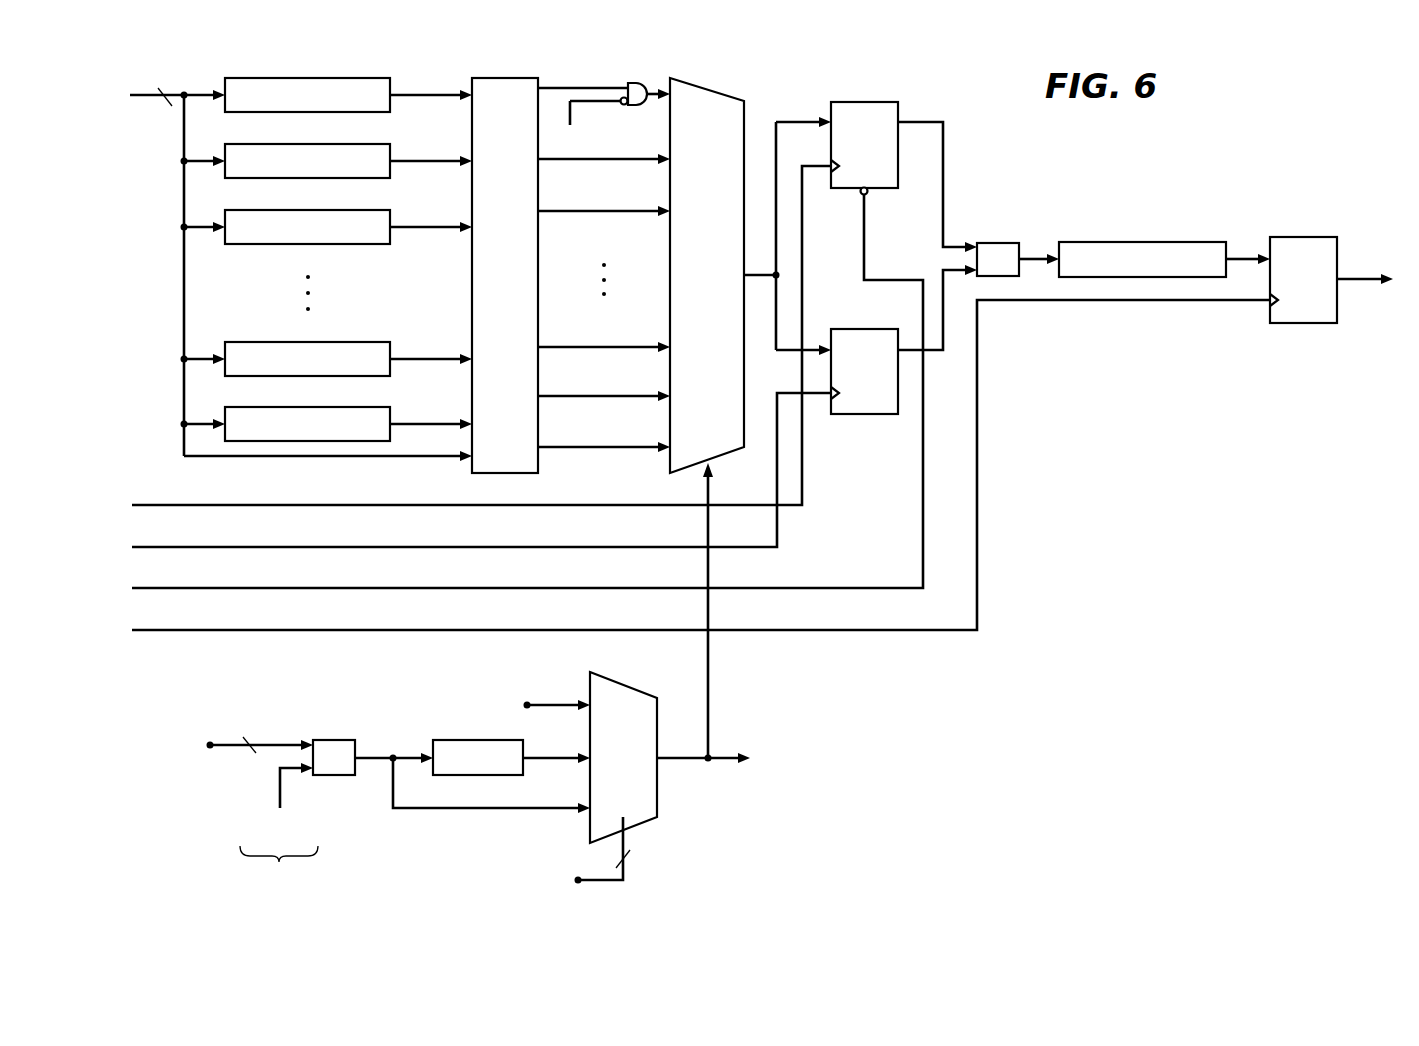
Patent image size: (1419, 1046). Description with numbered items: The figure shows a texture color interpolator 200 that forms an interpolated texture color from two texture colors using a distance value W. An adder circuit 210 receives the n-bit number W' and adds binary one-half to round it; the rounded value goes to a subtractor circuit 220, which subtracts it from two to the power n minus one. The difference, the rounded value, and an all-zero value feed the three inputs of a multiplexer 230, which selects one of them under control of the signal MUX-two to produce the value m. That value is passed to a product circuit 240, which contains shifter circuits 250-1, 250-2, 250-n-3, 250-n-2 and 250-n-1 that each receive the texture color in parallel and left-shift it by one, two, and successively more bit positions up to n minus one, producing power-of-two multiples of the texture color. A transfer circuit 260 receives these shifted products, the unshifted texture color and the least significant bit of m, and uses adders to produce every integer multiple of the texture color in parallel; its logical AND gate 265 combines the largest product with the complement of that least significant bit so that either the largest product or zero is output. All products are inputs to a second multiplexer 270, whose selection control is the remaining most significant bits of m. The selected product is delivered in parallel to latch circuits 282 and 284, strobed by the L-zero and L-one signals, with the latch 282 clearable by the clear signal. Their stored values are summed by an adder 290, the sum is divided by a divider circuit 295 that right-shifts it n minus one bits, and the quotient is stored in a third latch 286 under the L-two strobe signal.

The texture color interpolator 200 is at (1016, 180).
The adder circuit 210 is at (334, 740).
The subtractor circuit 220 is at (442, 740).
The multiplexer 230 is at (624, 685).
The product circuit 240 is at (203, 66).
The shifter circuit 250-n-1 is at (428, 76).
The shifter circuit 250-n-2 is at (428, 142).
The shifter circuit 250-n-3 is at (428, 208).
The shifter circuit 250-2 is at (432, 340).
The shifter circuit 250-1 is at (432, 405).
The transfer circuit 260 is at (478, 78).
The logical AND gate 265 is at (633, 81).
The multiplexer 270 is at (694, 76).
The latch circuit 282 is at (858, 102).
The latch circuit 284 is at (858, 329).
The third latch 286 is at (1300, 237).
The adder 290 is at (990, 243).
The divider circuit 295 is at (1134, 242).